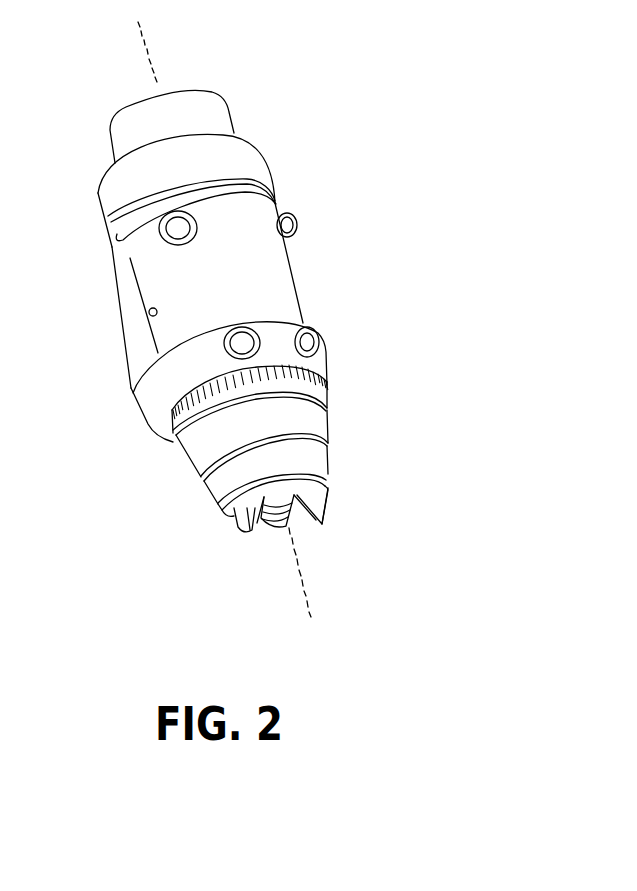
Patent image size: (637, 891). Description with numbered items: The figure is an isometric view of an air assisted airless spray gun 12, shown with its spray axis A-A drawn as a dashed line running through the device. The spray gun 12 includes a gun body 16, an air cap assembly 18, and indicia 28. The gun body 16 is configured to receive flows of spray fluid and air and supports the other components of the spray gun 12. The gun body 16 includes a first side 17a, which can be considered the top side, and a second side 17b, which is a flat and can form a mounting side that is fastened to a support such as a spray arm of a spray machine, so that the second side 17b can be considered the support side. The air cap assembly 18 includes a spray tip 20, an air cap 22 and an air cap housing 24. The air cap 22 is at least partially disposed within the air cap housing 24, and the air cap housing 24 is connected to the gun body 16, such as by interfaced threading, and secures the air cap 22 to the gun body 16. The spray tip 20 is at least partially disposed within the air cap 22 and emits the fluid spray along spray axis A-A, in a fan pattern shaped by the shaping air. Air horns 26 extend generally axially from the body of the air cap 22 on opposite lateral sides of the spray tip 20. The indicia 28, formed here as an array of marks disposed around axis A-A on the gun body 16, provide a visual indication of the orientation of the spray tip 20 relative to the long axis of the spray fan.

The spray gun 12 is at (220, 324).
The gun body 16 is at (145, 288).
The first side 17a is at (300, 273).
The second side 17b is at (117, 355).
The air cap assembly 18 is at (263, 543).
The spray tip 20 is at (280, 524).
The air cap 22 is at (337, 486).
The air cap housing 24 is at (337, 418).
The air horns 26 is at (224, 525).
The indicia 28 is at (167, 410).